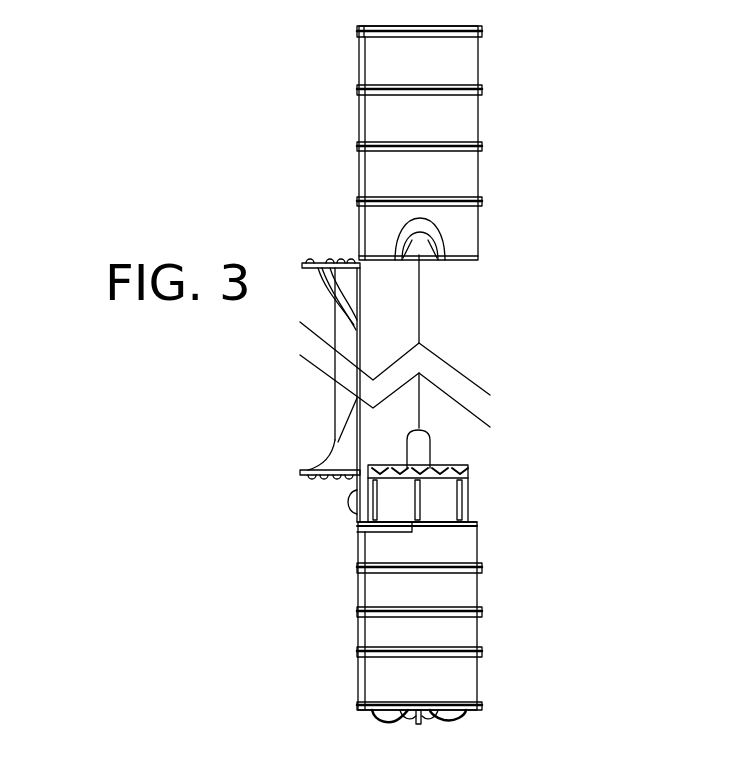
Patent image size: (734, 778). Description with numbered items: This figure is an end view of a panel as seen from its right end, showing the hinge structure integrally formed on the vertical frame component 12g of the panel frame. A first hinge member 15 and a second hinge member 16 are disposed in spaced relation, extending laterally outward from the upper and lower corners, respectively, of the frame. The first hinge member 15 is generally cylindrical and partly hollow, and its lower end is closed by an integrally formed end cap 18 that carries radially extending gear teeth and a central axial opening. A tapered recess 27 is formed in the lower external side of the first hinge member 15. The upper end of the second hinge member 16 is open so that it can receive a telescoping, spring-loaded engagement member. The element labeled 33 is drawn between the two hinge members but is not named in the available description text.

The first hinge member 15 is at (483, 115).
The end cap 18 is at (422, 257).
The tapered recess 27 is at (421, 259).
The vertical frame component 12g is at (390, 316).
The connector 33 is at (468, 500).
The second hinge member 16 is at (476, 587).